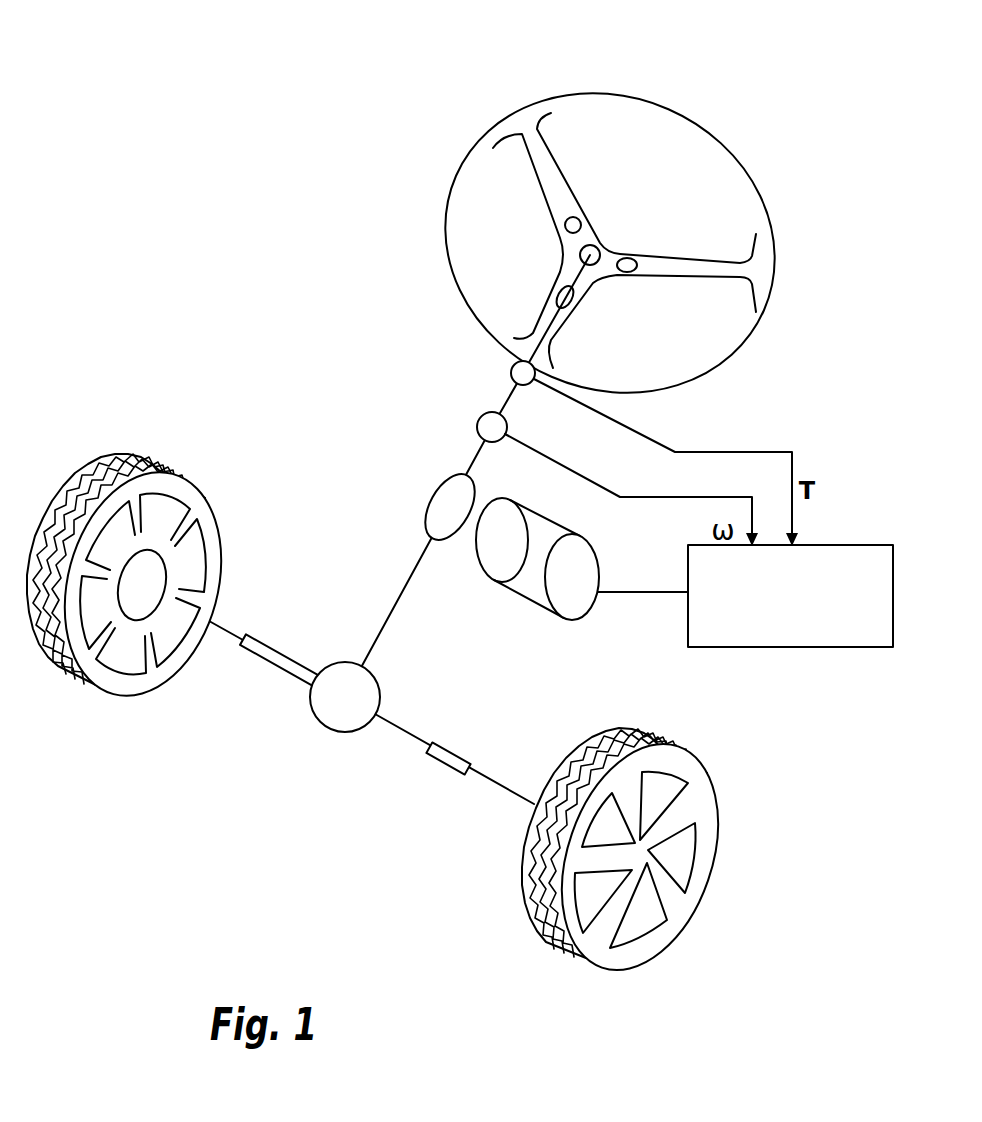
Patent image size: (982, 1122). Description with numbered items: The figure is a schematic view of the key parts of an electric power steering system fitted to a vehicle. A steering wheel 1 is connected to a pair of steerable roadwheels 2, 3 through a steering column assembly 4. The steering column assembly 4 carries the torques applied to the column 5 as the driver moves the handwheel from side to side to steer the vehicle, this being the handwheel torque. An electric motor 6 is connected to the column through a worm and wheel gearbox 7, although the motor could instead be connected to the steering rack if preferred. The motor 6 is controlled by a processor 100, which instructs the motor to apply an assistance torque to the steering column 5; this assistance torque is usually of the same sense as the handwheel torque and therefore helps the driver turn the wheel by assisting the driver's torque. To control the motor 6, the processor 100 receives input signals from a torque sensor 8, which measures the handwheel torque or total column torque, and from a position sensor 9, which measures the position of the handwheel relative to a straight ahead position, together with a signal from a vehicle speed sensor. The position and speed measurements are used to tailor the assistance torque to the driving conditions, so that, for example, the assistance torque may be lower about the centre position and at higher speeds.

The steering wheel 1 is at (499, 121).
The steerable roadwheel 2 is at (128, 697).
The steerable roadwheel 3 is at (567, 950).
The steering column assembly 4 is at (430, 388).
The column 5 is at (511, 397).
The electric motor 6 is at (528, 598).
The worm and wheel gearbox 7 is at (477, 525).
The torque sensor 8 is at (514, 365).
The position sensor 9 is at (478, 426).
The processor 100 is at (764, 630).